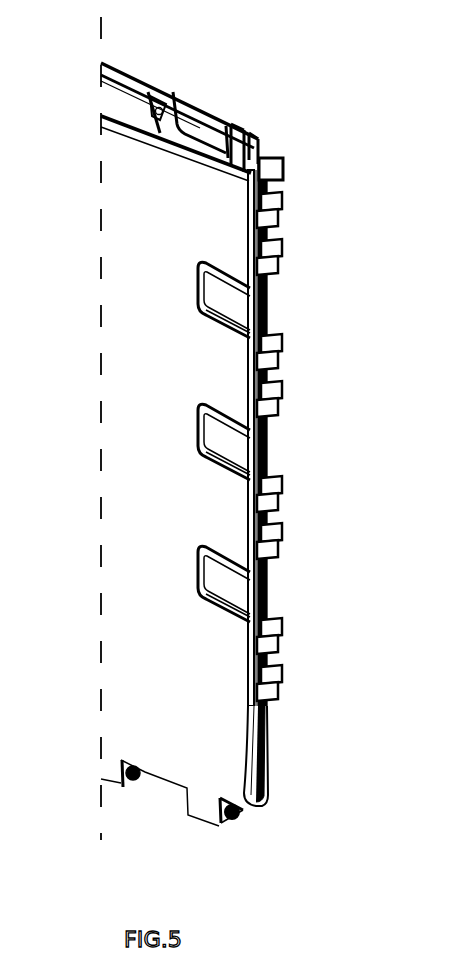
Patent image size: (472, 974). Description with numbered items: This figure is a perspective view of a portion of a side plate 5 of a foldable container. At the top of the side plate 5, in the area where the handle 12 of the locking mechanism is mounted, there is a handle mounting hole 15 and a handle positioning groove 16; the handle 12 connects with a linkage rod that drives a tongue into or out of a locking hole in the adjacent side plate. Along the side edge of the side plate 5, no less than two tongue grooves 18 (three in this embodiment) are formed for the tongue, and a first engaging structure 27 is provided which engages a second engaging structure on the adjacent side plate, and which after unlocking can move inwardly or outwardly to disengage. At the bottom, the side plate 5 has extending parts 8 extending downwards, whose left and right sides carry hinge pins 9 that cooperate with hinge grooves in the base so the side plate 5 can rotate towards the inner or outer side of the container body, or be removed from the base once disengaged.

The side plate 5 is at (133, 191).
The extending part 8 is at (224, 823).
The hinge pin 9 is at (240, 813).
The handle 12 is at (205, 122).
The handle mounting hole 15 is at (163, 96).
The handle positioning groove 16 is at (243, 165).
The tongue groove 18 is at (266, 314).
The first engaging structure 27 is at (281, 212).